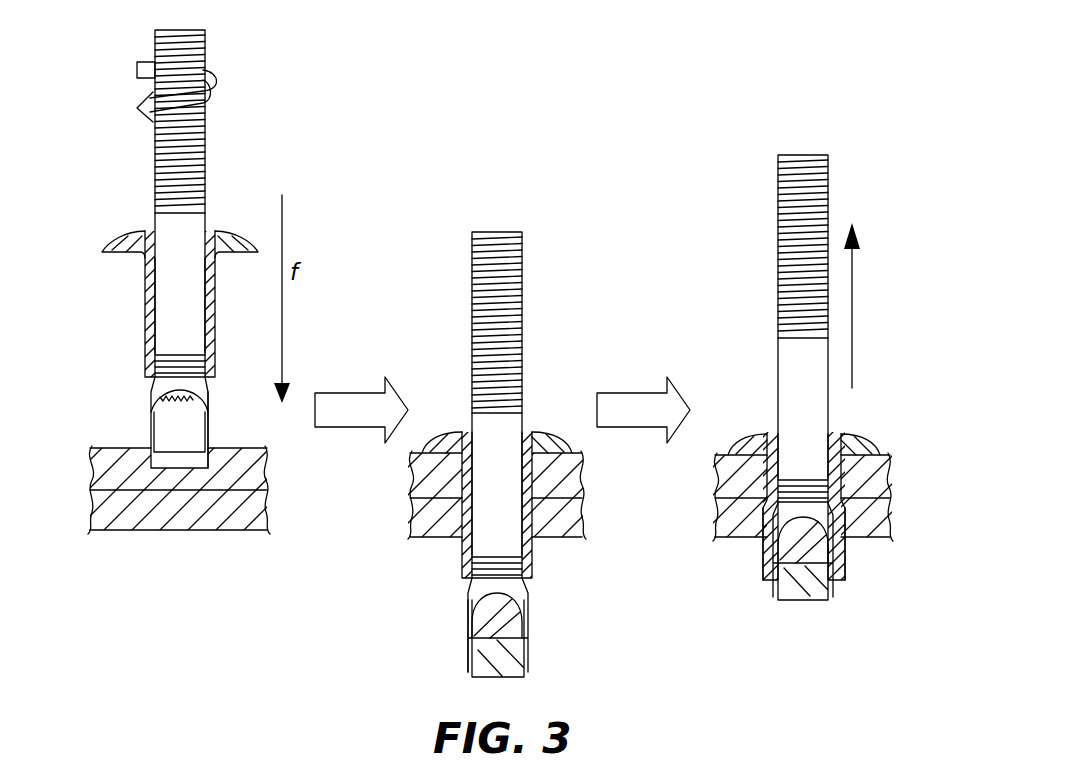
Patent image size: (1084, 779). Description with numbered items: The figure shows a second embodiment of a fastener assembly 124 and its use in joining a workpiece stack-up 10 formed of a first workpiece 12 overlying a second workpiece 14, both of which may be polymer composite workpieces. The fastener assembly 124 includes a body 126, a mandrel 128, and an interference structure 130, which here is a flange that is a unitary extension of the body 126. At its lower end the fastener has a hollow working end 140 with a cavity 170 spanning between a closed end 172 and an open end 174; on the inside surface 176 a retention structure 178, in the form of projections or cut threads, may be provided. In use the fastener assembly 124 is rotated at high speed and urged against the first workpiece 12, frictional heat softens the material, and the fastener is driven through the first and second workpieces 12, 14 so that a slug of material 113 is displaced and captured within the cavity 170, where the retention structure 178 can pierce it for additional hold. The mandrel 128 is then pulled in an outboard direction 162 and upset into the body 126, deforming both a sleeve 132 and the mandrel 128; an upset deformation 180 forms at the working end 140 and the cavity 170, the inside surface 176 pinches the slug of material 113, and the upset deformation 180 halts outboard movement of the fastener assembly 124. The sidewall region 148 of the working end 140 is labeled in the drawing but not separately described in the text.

The workpiece stack-up 10 is at (498, 503).
The first workpiece 12 is at (106, 470).
The second workpiece 14 is at (110, 508).
The slug of material 113 is at (490, 650).
The fastener assembly 124 is at (213, 122).
The body 126 is at (145, 292).
The mandrel 128 is at (183, 272).
The interference structure 130 is at (207, 232).
The sleeve 132 is at (768, 535).
The working end 140 is at (479, 503).
The tip sidewall 148 is at (470, 616).
The outboard direction 162 is at (852, 300).
The cavity 170 is at (200, 418).
The closed end 172 is at (178, 393).
The open end 174 is at (210, 468).
The inside surface 176 is at (165, 433).
The retention structure 178 is at (160, 405).
The upset deformation 180 is at (820, 530).